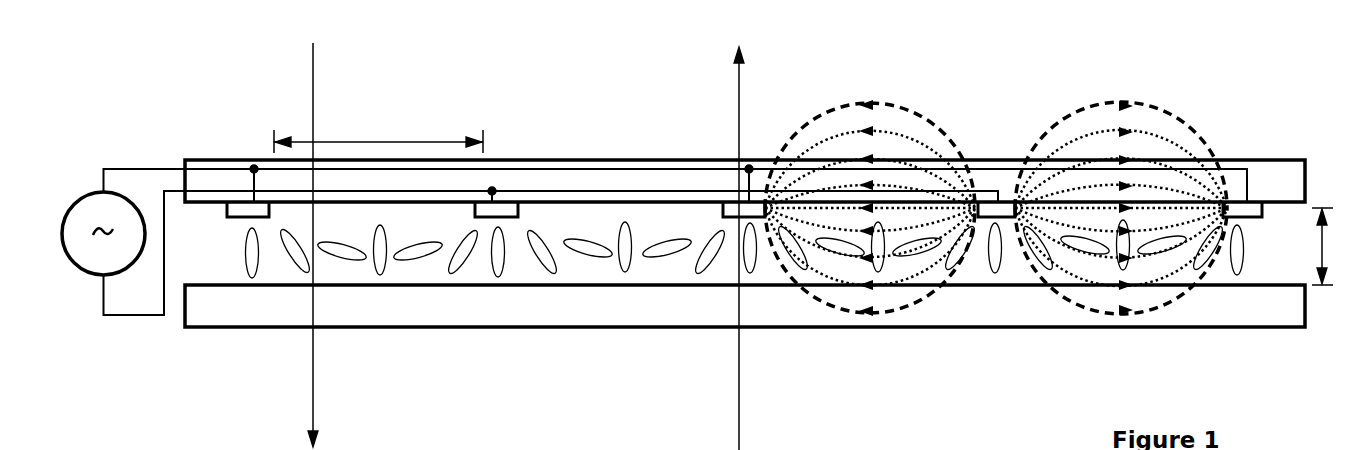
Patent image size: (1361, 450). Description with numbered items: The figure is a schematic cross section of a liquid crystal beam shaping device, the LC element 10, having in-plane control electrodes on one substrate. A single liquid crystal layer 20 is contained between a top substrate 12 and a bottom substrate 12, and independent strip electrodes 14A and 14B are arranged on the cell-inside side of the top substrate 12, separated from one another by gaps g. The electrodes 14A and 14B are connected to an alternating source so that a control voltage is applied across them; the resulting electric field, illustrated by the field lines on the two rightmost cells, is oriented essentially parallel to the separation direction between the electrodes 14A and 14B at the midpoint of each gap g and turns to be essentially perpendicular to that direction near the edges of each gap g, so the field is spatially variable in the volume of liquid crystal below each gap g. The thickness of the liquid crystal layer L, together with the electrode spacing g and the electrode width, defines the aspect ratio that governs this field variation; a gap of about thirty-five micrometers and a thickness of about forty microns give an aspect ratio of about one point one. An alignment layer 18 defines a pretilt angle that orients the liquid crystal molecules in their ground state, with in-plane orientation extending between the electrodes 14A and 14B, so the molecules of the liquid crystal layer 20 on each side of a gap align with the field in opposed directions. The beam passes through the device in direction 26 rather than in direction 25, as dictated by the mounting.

The LC element 10 is at (990, 137).
The substrate 12 is at (1275, 180).
The electrode 14A is at (236, 208).
The electrode 14B is at (506, 210).
The alignment layer 18 is at (633, 205).
The liquid crystal layer 20 is at (644, 256).
The direction 25 is at (313, 82).
The direction 26 is at (737, 107).
The gap g is at (378, 129).
The thickness of the liquid crystal layer L is at (1329, 246).